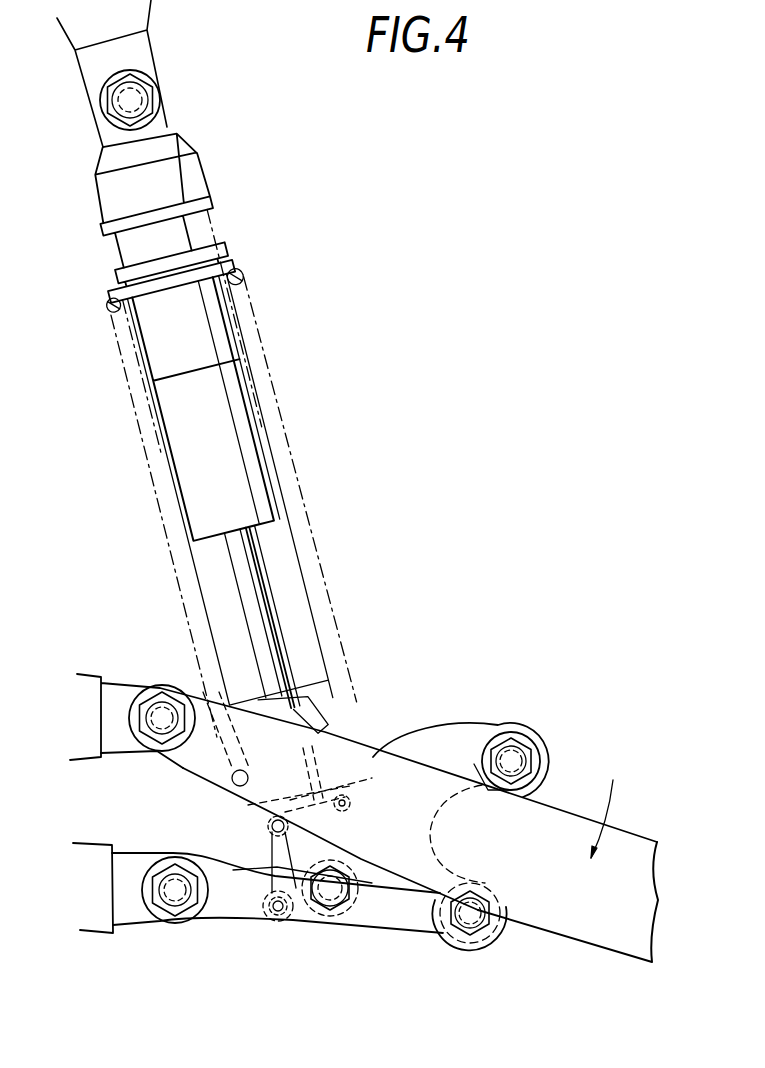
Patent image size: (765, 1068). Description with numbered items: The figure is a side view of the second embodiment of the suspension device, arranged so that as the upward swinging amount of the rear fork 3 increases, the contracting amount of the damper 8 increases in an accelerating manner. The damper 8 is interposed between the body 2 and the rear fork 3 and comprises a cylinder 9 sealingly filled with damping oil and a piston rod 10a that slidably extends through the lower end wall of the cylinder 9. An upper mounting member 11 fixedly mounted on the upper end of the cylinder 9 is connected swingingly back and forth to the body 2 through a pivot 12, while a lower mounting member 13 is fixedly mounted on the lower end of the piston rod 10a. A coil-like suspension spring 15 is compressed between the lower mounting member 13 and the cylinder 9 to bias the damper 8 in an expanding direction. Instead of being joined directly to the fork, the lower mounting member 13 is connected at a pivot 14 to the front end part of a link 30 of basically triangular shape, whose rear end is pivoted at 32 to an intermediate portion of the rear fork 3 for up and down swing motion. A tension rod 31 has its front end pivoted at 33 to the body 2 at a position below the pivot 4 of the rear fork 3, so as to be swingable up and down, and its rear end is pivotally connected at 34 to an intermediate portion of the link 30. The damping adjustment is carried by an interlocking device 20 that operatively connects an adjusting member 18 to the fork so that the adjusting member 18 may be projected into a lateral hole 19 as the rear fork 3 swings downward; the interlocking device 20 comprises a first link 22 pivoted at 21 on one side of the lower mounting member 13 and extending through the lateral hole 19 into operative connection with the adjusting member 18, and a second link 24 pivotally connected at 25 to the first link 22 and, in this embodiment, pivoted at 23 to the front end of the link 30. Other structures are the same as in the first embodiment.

The body 2 is at (145, 13).
The rear fork 3 is at (595, 935).
The pivot 4 is at (164, 716).
The damper 8 is at (257, 418).
The cylinder 9 is at (268, 486).
The piston rod 10a is at (282, 607).
The upper mounting member 11 is at (183, 141).
The pivot 12 is at (143, 100).
The lower mounting member 13 is at (320, 845).
The pivot 14 is at (326, 906).
The suspension spring 15 is at (242, 277).
The adjusting member 18 is at (295, 771).
The lateral hole 19 is at (282, 805).
The interlocking device 20 is at (268, 853).
The pivot 21 is at (352, 805).
The first link 22 is at (362, 788).
The pivot 23 is at (277, 914).
The second link 24 is at (265, 868).
The pivot 25 is at (273, 827).
The link 30 is at (448, 728).
The tension rod 31 is at (216, 916).
The pivot 32 is at (514, 760).
The pivot 33 is at (173, 902).
The pivot 34 is at (472, 916).